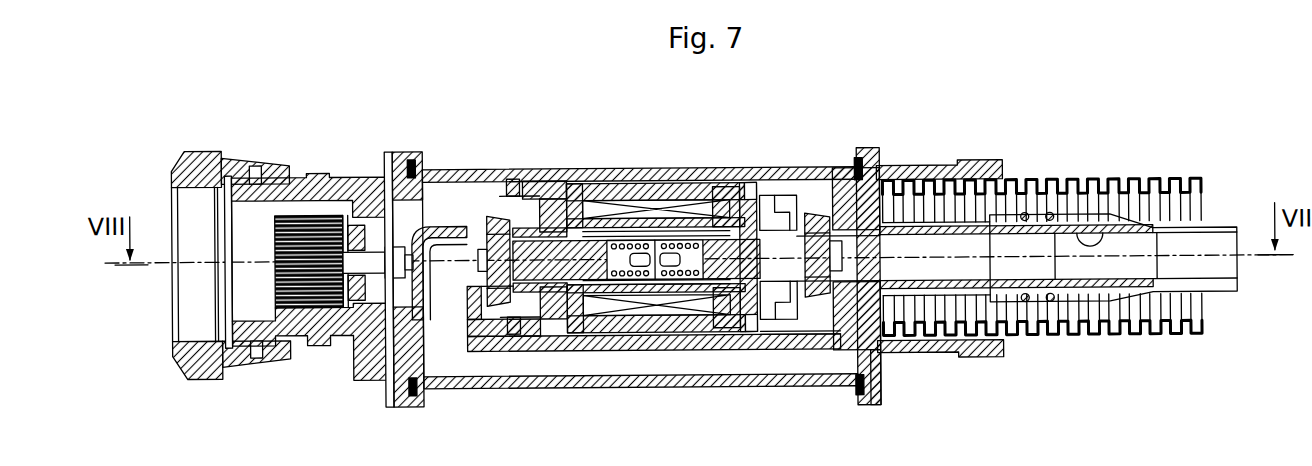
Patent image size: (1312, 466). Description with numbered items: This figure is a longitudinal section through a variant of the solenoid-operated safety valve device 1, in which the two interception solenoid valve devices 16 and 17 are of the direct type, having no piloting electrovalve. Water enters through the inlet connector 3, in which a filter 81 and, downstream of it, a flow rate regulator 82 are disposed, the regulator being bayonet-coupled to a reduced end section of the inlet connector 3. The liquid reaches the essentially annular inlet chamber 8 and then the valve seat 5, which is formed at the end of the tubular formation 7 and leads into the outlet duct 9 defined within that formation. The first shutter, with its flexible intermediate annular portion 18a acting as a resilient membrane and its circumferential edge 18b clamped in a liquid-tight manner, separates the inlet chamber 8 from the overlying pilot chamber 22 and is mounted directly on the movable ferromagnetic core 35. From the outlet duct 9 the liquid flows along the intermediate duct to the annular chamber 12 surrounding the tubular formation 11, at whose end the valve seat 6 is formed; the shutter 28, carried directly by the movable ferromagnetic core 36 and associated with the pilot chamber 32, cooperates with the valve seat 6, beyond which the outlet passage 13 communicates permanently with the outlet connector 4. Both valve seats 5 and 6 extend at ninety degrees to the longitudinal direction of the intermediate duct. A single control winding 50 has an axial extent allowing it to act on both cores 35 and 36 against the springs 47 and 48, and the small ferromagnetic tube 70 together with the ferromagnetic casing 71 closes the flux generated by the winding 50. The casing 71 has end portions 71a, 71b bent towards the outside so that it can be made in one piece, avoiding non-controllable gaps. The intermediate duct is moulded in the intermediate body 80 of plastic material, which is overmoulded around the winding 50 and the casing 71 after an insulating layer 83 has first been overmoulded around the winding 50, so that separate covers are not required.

The solenoid-operated safety valve device 1 is at (898, 113).
The inlet connector 3 is at (244, 198).
The outlet connector 4 is at (1128, 168).
The valve seat 5 is at (484, 210).
The valve seat 6 is at (825, 212).
The tubular formation 7 is at (418, 280).
The inlet chamber 8 is at (427, 156).
The outlet duct 9 is at (418, 333).
The tubular formation 11 is at (843, 170).
The annular chamber 12 is at (825, 355).
The outlet passage or duct 13 is at (903, 240).
The interception solenoid valve device 16 is at (605, 160).
The interception solenoid valve device 17 is at (692, 160).
The flexible intermediate annular portion 18a is at (502, 352).
The circumferential edge 18b is at (512, 203).
The pilot chamber 22 is at (540, 182).
The shutter 28 is at (786, 345).
The pilot chamber 32 is at (783, 197).
The movable ferromagnetic core 35 is at (580, 218).
The movable ferromagnetic core 36 is at (722, 200).
The spring 47 is at (623, 320).
The spring 48 is at (720, 300).
The control winding 50 is at (663, 217).
The small tube 70 is at (680, 300).
The ferromagnetic envelope/casing 71 is at (628, 186).
The end portion 71a is at (540, 345).
The end portion 71b is at (748, 186).
The intermediate body 80 is at (453, 170).
The filter 81 is at (305, 305).
The flow rate regulator 82 is at (380, 220).
The insulating layer 83 is at (587, 335).